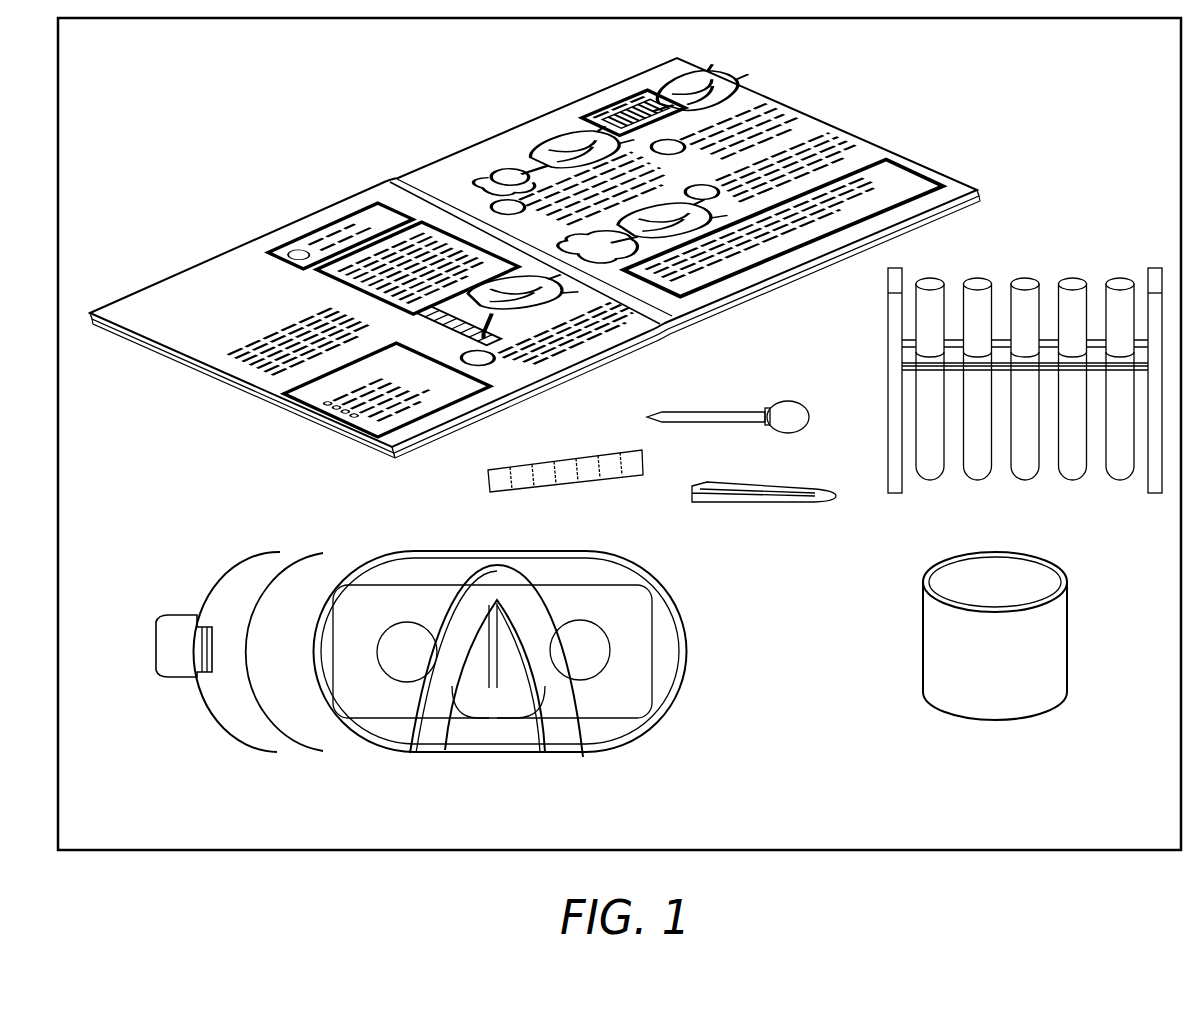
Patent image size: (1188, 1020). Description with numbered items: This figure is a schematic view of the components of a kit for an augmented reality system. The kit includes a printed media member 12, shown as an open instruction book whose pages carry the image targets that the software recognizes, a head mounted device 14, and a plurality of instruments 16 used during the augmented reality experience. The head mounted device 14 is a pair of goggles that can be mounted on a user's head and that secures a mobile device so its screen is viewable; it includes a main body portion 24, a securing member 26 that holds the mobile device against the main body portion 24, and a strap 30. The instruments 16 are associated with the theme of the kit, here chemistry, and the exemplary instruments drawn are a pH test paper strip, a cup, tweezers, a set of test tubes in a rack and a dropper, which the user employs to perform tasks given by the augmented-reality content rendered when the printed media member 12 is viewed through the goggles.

The printed media member 12 is at (954, 185).
The head mounted device 14 is at (416, 659).
The plurality of instruments 16 is at (849, 551).
The main body portion 24 is at (336, 568).
The securing member 26 is at (563, 737).
The strap 30 is at (153, 643).